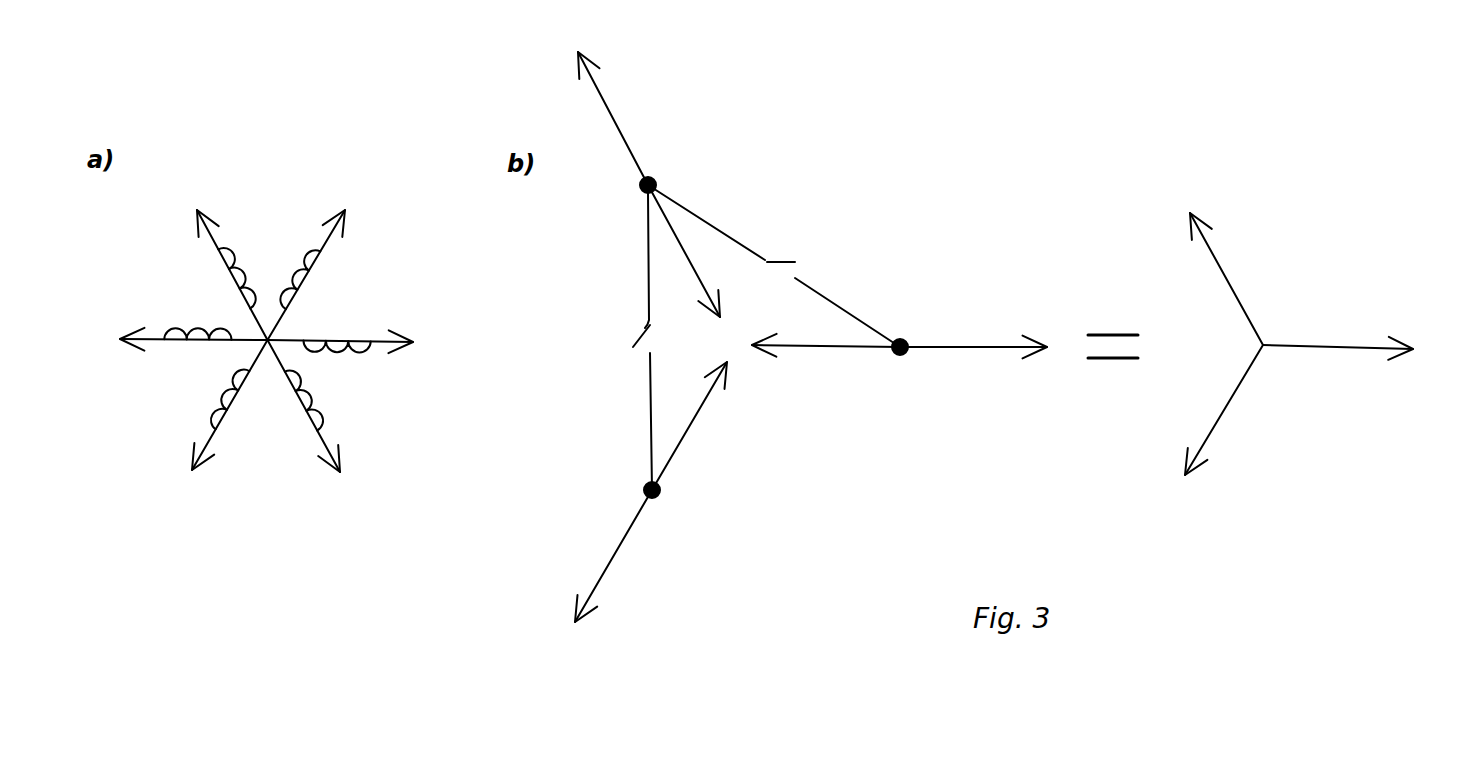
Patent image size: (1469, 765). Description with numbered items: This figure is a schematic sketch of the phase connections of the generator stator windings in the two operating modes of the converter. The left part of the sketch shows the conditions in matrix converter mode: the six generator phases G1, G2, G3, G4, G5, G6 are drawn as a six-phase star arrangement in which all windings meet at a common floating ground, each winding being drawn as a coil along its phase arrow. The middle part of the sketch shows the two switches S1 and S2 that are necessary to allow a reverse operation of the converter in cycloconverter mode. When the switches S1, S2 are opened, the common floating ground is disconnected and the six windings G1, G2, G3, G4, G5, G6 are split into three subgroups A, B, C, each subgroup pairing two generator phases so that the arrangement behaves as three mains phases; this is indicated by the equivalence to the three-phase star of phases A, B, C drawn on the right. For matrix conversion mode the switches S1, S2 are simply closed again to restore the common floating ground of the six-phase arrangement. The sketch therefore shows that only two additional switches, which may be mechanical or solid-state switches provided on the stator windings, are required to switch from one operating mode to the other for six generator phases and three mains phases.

The first generator winding / phase vector G1 is at (658, 338).
The second generator winding / phase vector G2 is at (494, 328).
The third generator winding / phase vector G3 is at (409, 481).
The fourth generator winding / phase vector G4 is at (510, 326).
The fifth generator winding / phase vector G5 is at (422, 190).
The sixth generator winding / phase vector G6 is at (517, 350).
The switch S1 is at (774, 266).
The switch S2 is at (625, 345).
The subgroup A is at (1221, 369).
The subgroup B is at (900, 204).
The subgroup C is at (940, 483).